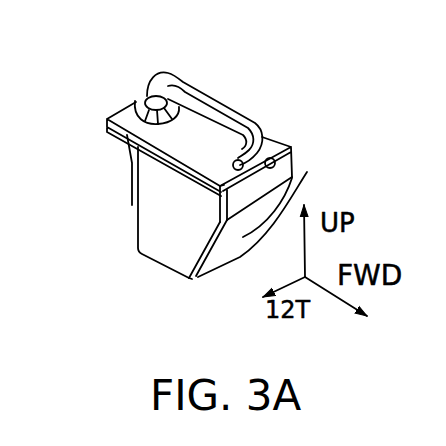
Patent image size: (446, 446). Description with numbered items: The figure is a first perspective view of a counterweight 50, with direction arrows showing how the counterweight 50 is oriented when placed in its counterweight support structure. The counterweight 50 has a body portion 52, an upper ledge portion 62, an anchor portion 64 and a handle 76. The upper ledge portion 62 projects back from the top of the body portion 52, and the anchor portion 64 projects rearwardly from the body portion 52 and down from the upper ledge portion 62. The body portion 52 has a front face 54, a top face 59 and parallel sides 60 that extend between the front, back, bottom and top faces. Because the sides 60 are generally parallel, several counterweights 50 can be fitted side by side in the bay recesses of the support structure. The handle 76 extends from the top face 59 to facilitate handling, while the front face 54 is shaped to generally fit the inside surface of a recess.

The counterweight 50 is at (295, 85).
The body portion 52 is at (158, 269).
The front face 54 is at (299, 174).
The top face 59 is at (210, 153).
The parallel sides 60 is at (175, 215).
The upper ledge portion 62 is at (134, 103).
The anchor portion 64 is at (132, 161).
The handle 76 is at (201, 90).